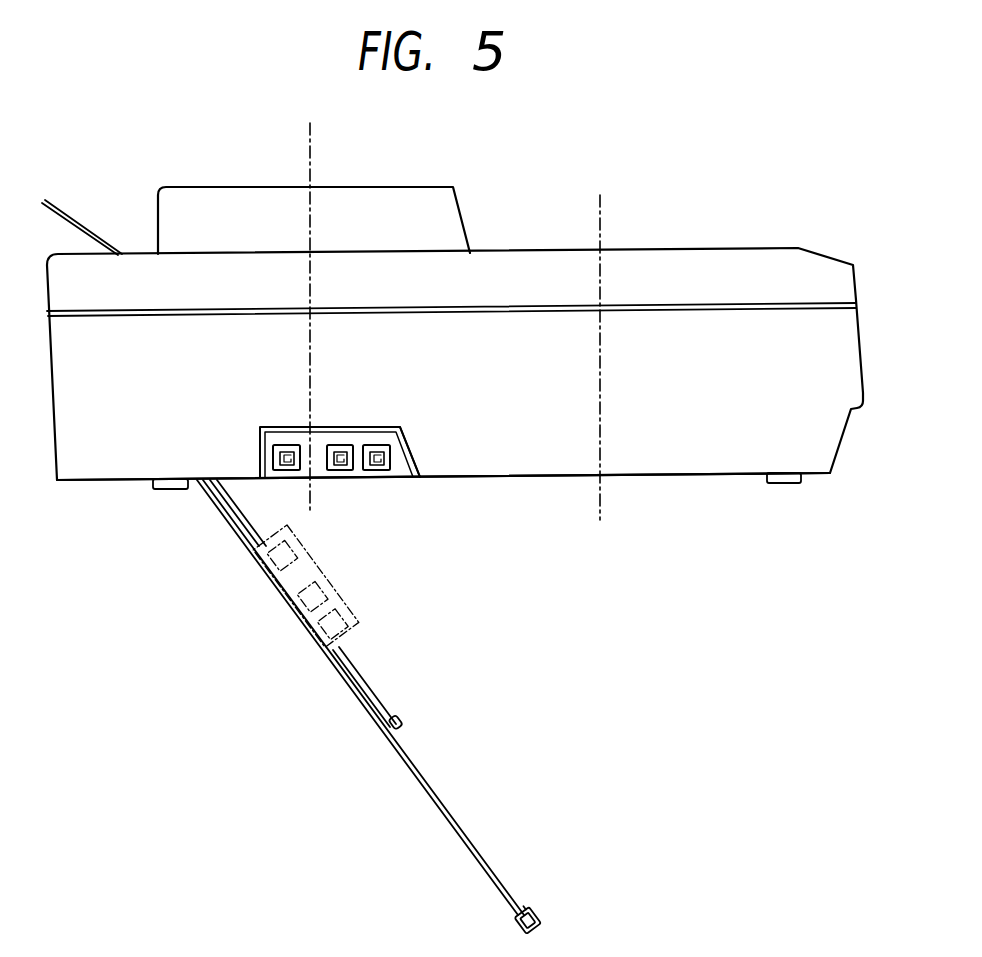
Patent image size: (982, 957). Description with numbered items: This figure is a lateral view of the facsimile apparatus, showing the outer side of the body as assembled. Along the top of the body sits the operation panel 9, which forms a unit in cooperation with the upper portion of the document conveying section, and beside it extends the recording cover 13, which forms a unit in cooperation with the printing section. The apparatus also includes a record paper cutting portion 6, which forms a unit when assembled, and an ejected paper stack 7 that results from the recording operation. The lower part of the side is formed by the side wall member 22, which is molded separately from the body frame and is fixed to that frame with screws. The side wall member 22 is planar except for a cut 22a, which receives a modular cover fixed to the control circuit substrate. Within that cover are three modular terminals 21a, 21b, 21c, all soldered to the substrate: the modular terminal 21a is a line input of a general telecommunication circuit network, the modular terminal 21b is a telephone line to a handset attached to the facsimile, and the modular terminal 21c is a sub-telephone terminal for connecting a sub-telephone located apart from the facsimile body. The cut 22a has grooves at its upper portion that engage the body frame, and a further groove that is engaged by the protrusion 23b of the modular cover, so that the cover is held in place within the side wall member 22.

The operation panel 9 is at (410, 188).
The recording cover 13 is at (652, 250).
The modular terminal 21a is at (273, 452).
The modular terminal 21b is at (393, 463).
The modular terminal 21c is at (357, 462).
The side wall member 22 is at (685, 465).
The cut 22a is at (385, 427).
The protrusion 23b is at (412, 478).
The record paper cutting portion 6 is at (290, 514).
The ejected paper stack 7 is at (580, 520).